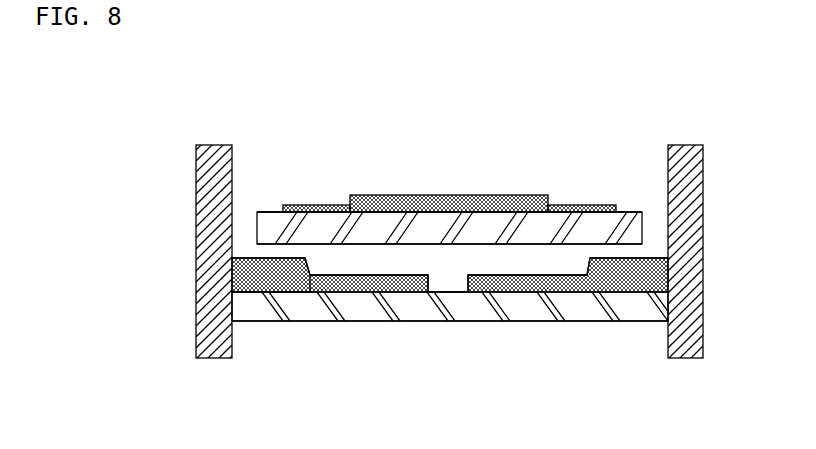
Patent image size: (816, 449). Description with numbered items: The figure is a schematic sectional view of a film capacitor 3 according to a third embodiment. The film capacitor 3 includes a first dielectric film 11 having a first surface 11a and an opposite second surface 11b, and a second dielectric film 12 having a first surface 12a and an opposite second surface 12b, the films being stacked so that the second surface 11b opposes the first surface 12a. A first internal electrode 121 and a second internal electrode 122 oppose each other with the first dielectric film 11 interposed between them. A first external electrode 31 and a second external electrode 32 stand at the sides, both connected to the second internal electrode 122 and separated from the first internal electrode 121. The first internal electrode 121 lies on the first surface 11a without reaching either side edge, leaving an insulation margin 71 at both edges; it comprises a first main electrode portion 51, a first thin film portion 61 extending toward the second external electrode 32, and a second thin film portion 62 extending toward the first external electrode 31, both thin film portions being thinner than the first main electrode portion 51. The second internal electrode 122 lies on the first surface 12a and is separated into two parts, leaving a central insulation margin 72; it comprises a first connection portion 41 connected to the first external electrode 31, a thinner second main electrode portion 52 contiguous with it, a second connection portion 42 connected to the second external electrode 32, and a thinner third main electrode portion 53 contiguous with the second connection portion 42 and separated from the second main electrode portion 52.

The film capacitor 3 is at (712, 118).
The first external electrode 31 is at (208, 178).
The second external electrode 32 is at (693, 178).
The first dielectric film 11 is at (266, 233).
The first surface 11a is at (287, 212).
The second surface 11b is at (282, 245).
The second dielectric film 12 is at (672, 312).
The first surface 12a is at (660, 291).
The second surface 12b is at (645, 322).
The first connection portion 41 is at (262, 278).
The second connection portion 42 is at (630, 283).
The first main electrode portion 51 is at (428, 196).
The second main electrode portion 52 is at (360, 287).
The third main electrode portion 53 is at (527, 283).
The first thin film portion 61 is at (583, 206).
The second thin film portion 62 is at (313, 206).
The insulation margin 71 is at (270, 212).
The insulation margin 72 is at (452, 290).
The first internal electrode 121 is at (323, 91).
The second internal electrode 122 is at (262, 389).